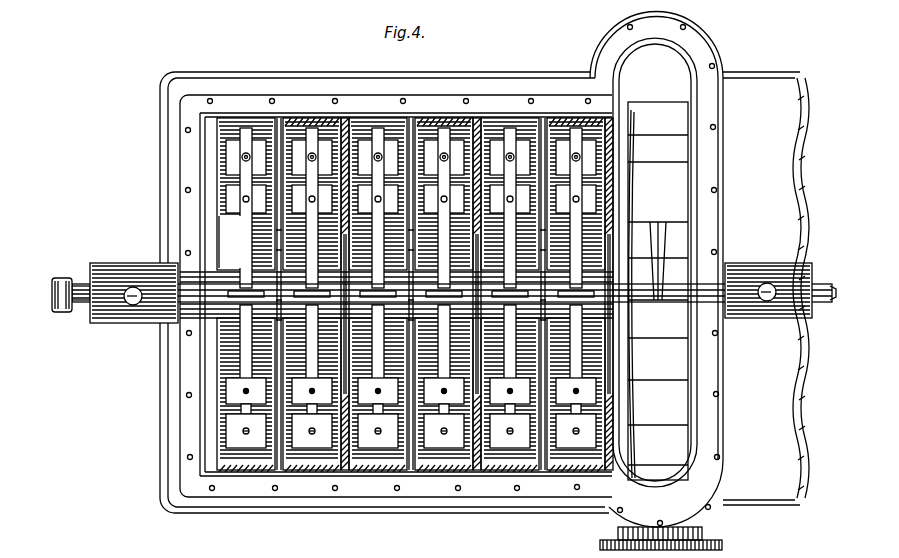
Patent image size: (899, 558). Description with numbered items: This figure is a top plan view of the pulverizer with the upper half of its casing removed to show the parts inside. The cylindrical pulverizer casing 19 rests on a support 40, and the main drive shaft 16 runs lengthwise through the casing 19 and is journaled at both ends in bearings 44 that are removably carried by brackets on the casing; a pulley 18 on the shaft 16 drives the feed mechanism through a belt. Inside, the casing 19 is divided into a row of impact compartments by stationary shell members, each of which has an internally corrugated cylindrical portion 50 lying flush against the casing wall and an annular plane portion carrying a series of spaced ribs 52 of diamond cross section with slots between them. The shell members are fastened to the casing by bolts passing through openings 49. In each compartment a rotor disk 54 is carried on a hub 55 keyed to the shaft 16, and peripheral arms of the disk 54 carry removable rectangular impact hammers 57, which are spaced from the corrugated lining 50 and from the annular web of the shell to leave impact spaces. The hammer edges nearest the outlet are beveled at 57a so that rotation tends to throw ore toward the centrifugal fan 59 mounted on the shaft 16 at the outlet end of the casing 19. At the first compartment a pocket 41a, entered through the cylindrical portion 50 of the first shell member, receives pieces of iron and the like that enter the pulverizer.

The main drive shaft 16 is at (82, 285).
The pulley 18 is at (64, 277).
The pulverizer casing 19 is at (488, 90).
The support 40 is at (768, 77).
The pocket 41a is at (228, 242).
The bearings 44 is at (122, 263).
The openings 49 is at (245, 134).
The cylindrical portion 50 is at (334, 124).
The ribs 52 is at (280, 128).
The rotor disk 54 is at (247, 253).
The hub 55 is at (250, 290).
The impact hammers 57 is at (240, 381).
The beveled edge 57a is at (250, 380).
The centrifugal fan 59 is at (650, 108).